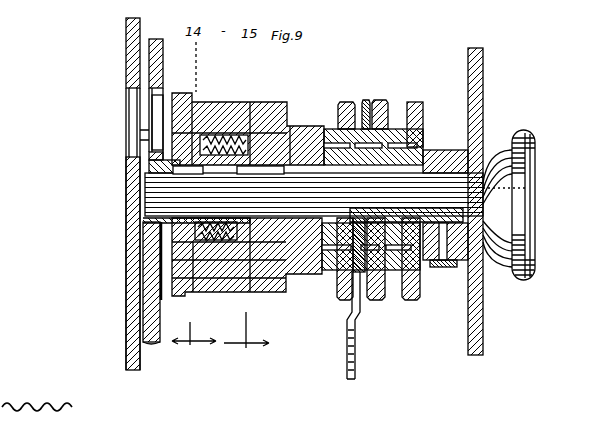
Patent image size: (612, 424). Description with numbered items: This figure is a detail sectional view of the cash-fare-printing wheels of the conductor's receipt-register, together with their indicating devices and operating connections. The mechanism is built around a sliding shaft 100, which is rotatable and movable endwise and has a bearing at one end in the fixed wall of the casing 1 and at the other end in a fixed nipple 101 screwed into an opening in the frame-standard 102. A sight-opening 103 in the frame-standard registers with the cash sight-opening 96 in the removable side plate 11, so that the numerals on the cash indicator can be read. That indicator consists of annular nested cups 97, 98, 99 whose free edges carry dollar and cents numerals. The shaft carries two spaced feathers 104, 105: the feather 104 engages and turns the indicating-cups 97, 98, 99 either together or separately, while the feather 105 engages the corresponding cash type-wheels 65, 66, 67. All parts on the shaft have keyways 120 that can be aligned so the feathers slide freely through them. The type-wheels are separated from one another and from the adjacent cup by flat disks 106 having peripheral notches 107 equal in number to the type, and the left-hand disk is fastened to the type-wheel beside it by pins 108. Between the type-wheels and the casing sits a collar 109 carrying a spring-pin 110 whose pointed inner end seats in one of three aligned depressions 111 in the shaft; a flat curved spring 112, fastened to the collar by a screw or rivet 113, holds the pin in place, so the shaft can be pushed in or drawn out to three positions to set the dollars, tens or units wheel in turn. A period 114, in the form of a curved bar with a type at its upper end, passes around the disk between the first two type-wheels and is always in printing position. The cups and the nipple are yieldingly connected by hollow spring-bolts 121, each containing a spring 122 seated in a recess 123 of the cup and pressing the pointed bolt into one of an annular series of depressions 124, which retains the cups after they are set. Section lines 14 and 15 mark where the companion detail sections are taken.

The casing 1 is at (485, 80).
The removable side plate 11 is at (133, 51).
The section line 14 14 is at (194, 344).
The section line 15 15 is at (246, 341).
The cash type-wheel 65 is at (341, 188).
The cash type-wheel 66 is at (380, 100).
The cash type-wheel 67 is at (416, 100).
The cash sight-opening 96 is at (130, 147).
The indicating-cup 97 is at (170, 292).
The indicating-cup 98 is at (168, 272).
The indicating-cup 99 is at (168, 252).
The sliding shaft 100 is at (153, 190).
The nipple 101 is at (157, 165).
The frame-standard 102 is at (152, 68).
The sight-opening 103 is at (153, 102).
The feather 104 is at (256, 167).
The feather 105 is at (441, 200).
The flat disk 106 is at (396, 128).
The peripheral notch 107 is at (332, 274).
The pin 108 is at (425, 108).
The collar 109 is at (486, 165).
The spring-pin 110 is at (486, 262).
The depression 111 is at (485, 222).
The flat curved spring 112 is at (446, 268).
The screw or rivet 113 is at (530, 125).
The period 114 is at (364, 110).
The keyway 120 is at (485, 153).
The hollow spring-bolt 121 is at (229, 150).
The spring 122 is at (240, 160).
The recess 123 is at (209, 103).
The depression 124 is at (267, 101).